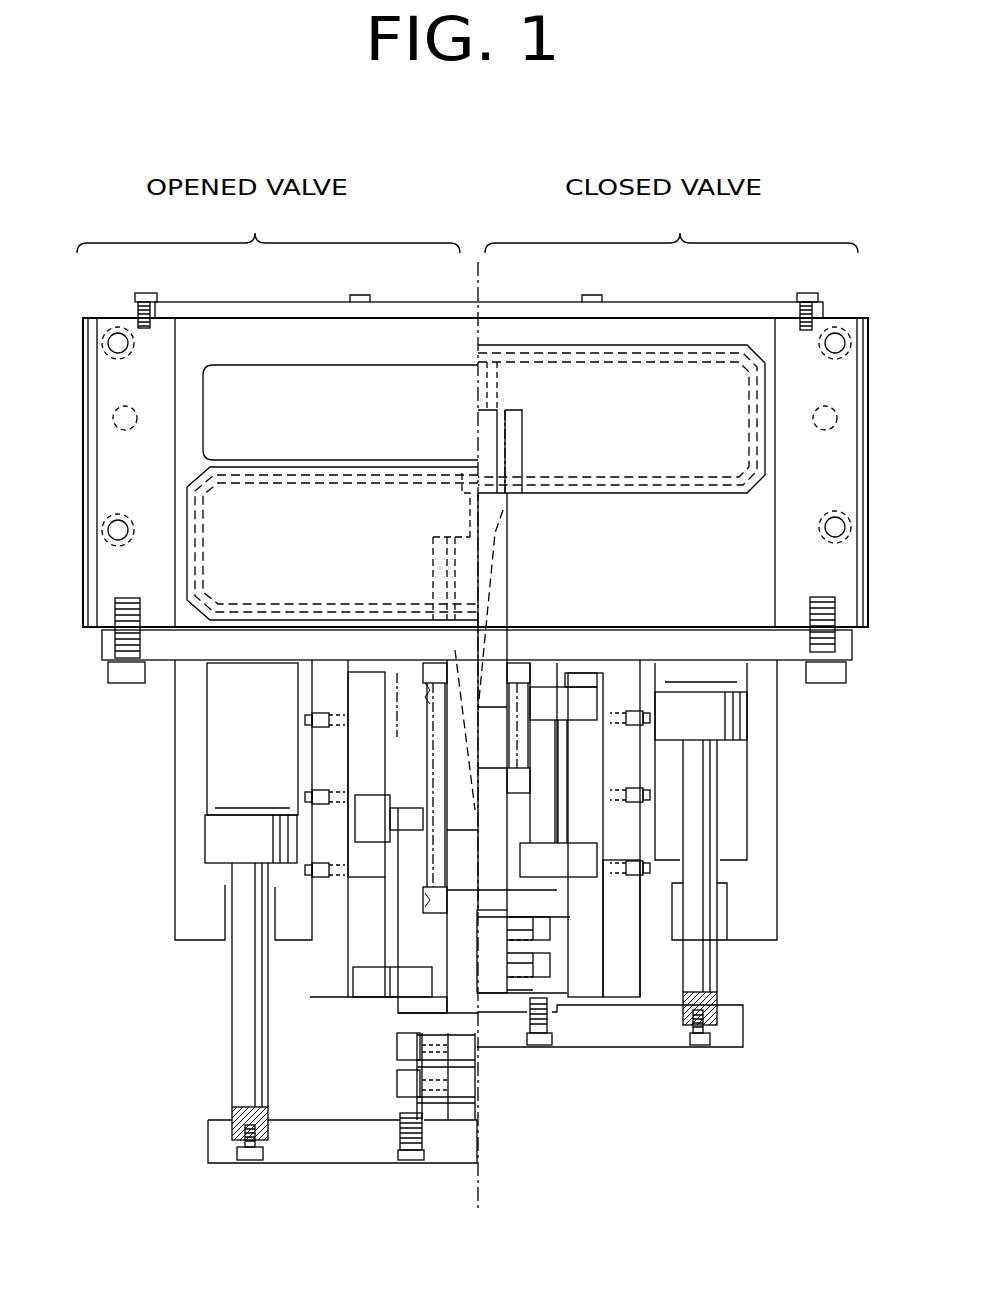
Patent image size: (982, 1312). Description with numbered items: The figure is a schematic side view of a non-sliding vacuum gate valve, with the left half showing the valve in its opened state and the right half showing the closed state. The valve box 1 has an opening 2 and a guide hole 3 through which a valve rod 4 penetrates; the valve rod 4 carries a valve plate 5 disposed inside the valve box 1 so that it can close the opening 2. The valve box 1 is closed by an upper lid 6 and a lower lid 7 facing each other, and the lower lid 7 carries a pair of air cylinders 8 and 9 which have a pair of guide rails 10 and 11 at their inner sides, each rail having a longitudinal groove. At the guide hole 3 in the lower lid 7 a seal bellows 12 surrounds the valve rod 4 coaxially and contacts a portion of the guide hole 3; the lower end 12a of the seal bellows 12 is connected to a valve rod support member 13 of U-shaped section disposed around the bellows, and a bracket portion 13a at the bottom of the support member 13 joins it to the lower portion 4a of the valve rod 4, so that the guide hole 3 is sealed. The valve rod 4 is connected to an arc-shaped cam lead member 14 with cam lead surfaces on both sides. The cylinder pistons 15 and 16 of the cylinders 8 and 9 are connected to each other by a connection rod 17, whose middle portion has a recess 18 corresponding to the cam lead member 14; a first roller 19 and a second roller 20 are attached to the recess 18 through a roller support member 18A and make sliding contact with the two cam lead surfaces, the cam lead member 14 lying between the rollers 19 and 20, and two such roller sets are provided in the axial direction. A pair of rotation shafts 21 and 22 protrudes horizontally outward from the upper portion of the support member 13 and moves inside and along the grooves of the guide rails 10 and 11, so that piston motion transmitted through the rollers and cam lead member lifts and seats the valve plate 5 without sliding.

The valve box 1 is at (840, 577).
The opening 2 is at (315, 378).
The guide hole 3 is at (507, 645).
The valve rod 4 is at (502, 563).
The lower portion of the valve rod 4a is at (577, 863).
The valve plate 5 is at (693, 483).
The upper lid 6 is at (748, 306).
The lower lid 7 is at (787, 653).
The air cylinder 8 is at (185, 772).
The air cylinder 9 is at (763, 827).
The guide rail 10 is at (327, 983).
The guide rail 11 is at (622, 980).
The seal bellows 12 is at (430, 673).
The lower end of the seal bellows 12a is at (420, 903).
The valve rod support member 13 is at (400, 945).
The slider bracket 13a is at (405, 1003).
The cam lead member 14 is at (453, 1023).
The cylinder piston 15 is at (230, 840).
The cylinder piston 16 is at (747, 717).
The connection rod 17 is at (300, 1143).
The recess 18 is at (457, 1120).
The roller support member 18A is at (397, 1107).
The first roller 19 is at (495, 932).
The second roller 20 is at (495, 932).
The rotation shaft 21 is at (560, 880).
The rotation shaft 22 is at (630, 912).